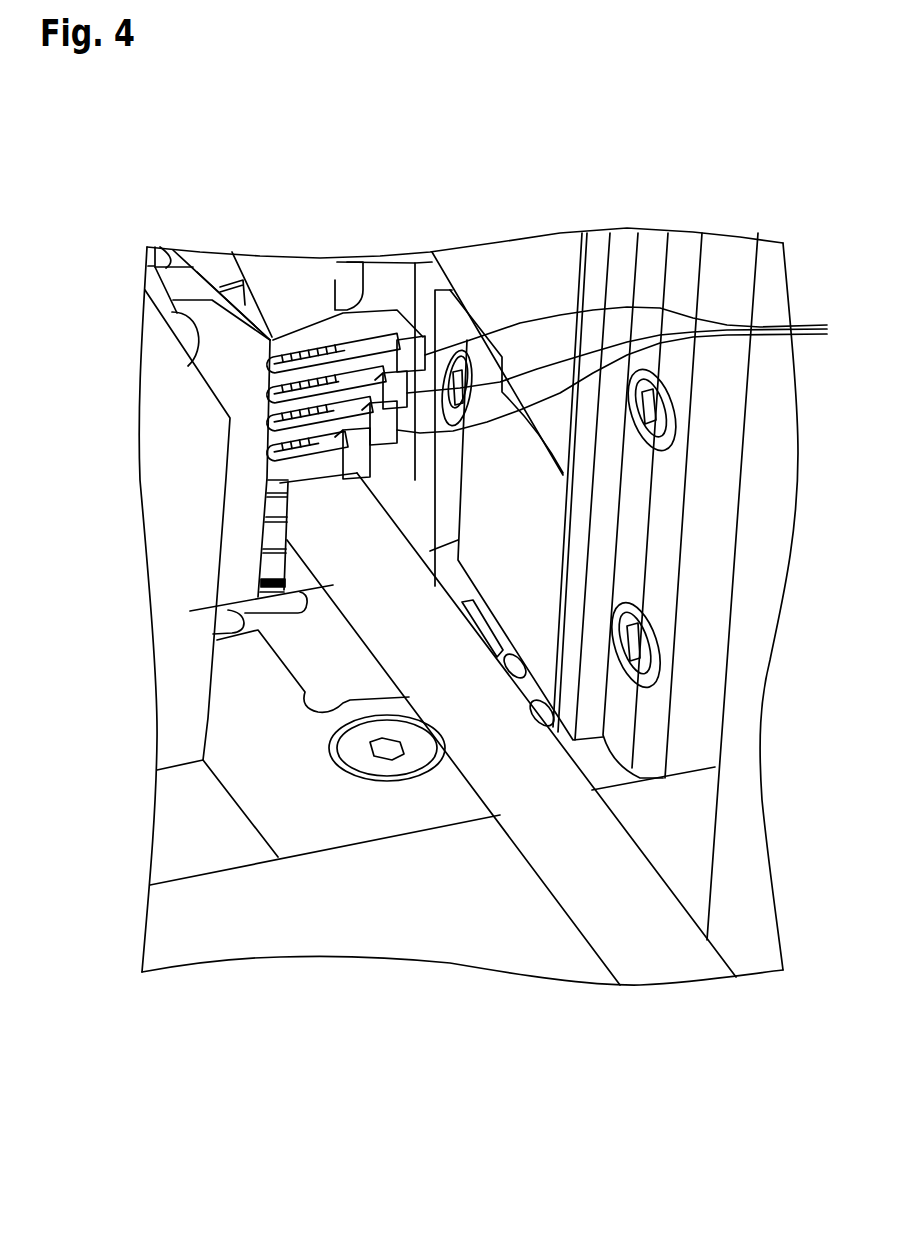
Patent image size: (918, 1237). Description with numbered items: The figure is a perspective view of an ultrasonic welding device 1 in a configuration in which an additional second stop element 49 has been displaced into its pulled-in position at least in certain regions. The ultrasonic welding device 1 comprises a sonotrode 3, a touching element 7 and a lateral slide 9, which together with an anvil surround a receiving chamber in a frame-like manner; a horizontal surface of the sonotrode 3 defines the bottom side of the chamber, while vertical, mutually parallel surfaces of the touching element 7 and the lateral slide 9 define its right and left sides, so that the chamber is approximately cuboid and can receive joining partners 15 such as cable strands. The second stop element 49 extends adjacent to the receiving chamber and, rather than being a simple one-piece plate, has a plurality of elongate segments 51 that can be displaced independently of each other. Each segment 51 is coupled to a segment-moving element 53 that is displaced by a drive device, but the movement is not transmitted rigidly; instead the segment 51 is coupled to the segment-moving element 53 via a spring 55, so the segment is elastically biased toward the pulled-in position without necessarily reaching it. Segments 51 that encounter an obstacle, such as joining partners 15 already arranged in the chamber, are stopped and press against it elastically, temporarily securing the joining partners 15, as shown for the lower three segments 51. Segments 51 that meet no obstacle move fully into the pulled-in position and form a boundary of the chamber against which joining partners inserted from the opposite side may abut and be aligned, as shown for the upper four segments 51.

The ultrasonic welding device 1 is at (113, 198).
The sonotrode 3 is at (303, 567).
The touching element 7 is at (404, 275).
The lateral slide 9 is at (217, 265).
The joining partners 15 is at (653, 953).
The second stop element 49 is at (293, 334).
The segments 51 is at (632, 370).
The segment-moving element 53 is at (322, 357).
The spring 55 is at (360, 262).